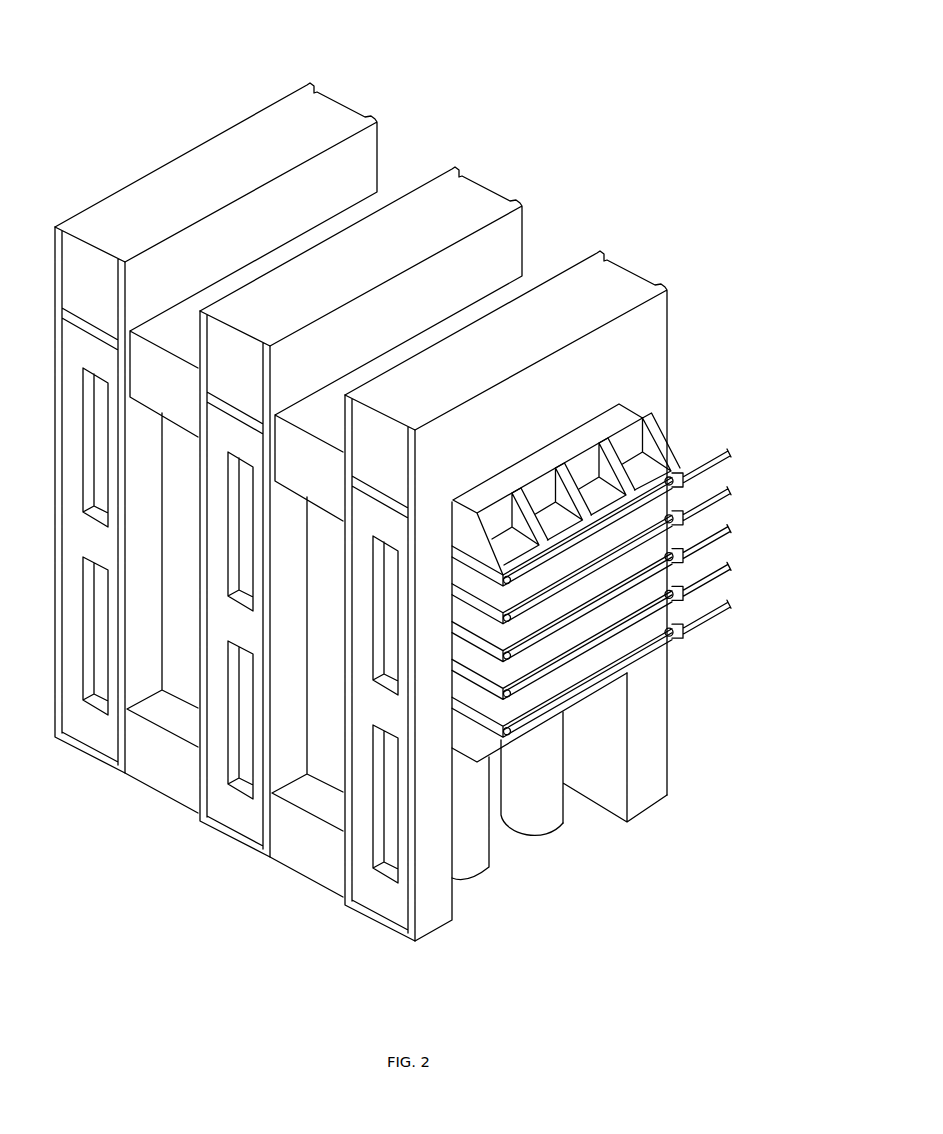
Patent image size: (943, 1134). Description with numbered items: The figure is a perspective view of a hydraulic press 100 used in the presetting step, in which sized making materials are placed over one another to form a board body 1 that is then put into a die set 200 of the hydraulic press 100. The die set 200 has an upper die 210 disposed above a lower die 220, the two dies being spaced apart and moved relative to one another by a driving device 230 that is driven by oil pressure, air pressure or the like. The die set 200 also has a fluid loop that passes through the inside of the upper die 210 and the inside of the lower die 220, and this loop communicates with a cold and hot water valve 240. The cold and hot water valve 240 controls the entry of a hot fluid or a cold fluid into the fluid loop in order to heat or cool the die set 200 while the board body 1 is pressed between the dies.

The hydraulic press 100 is at (490, 111).
The die set 200 is at (757, 723).
The upper die 210 is at (565, 658).
The lower die 220 is at (562, 698).
The driving device 230 is at (546, 816).
The cold and hot water valve 240 is at (729, 567).
The board body 1 is at (638, 631).